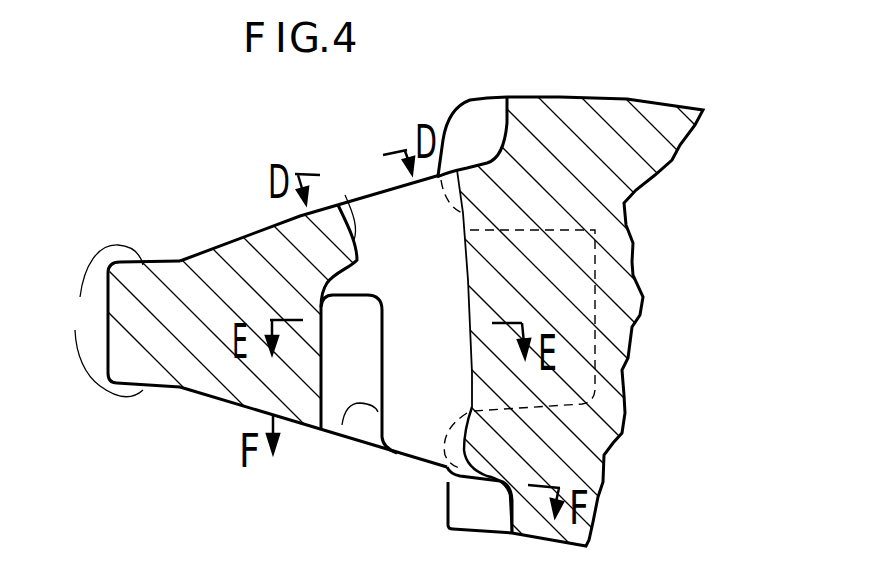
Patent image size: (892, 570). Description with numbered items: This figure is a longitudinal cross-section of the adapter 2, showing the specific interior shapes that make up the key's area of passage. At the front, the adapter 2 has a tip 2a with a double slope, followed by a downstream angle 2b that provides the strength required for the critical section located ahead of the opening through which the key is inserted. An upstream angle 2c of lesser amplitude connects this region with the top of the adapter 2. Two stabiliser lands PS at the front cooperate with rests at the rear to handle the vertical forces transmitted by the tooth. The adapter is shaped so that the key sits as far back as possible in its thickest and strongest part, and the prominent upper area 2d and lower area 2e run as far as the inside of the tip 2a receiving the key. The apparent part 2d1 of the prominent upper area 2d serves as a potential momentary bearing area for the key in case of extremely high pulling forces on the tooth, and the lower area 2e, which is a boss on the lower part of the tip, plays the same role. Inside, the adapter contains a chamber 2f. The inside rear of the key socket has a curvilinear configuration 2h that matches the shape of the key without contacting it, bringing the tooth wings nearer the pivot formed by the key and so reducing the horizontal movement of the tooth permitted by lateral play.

The adapter 2 is at (630, 93).
The tip 2a is at (165, 277).
The downstream angle 2b is at (260, 237).
The upstream angle 2c is at (382, 190).
The prominent upper area 2d is at (339, 205).
The apparent part of the prominent upper area 2d1 is at (345, 195).
The boss 2e is at (358, 430).
The chamber 2f is at (353, 372).
The curvilinear configuration 2h is at (471, 352).
The stabiliser lands PS is at (98, 321).